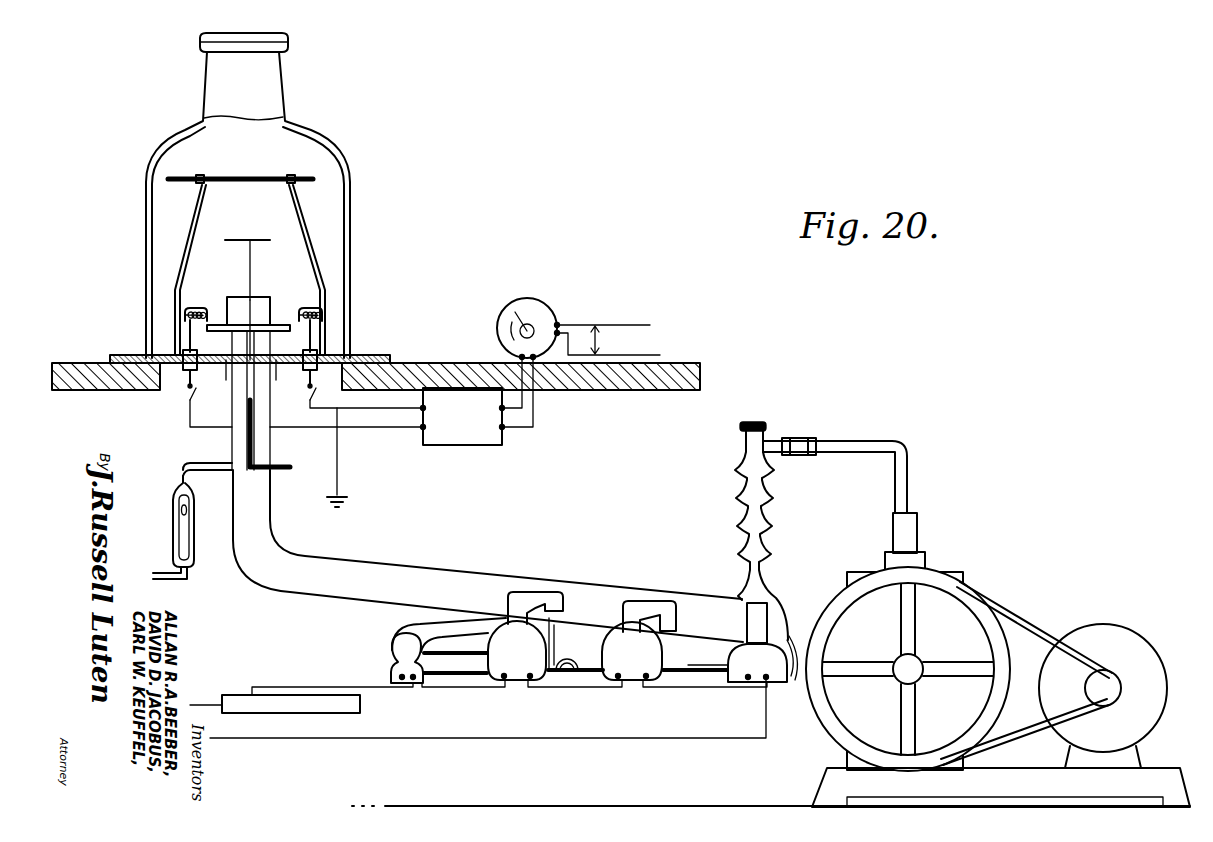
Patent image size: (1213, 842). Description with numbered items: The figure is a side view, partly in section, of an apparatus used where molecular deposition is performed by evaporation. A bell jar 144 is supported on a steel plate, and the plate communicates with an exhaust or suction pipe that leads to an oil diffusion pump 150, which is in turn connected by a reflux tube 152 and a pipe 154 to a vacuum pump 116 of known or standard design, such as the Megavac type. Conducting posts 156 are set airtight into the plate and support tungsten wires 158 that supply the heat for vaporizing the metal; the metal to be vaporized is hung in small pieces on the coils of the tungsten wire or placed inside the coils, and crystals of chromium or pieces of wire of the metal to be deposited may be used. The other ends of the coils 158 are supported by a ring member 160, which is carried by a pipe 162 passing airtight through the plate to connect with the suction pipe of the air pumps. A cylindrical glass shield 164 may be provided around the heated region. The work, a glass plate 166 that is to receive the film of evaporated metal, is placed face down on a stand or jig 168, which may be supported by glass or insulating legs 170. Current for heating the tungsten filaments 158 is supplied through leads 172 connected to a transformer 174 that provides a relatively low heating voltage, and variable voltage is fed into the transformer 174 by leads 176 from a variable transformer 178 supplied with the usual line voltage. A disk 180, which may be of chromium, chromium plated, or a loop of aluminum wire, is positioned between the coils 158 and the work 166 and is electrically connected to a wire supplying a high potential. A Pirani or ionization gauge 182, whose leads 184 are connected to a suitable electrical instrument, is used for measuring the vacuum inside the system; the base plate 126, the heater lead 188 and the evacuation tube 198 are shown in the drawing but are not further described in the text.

The vacuum pump 116 is at (962, 572).
The base plate 126 is at (372, 356).
The bell jar 144 is at (351, 165).
The oil diffusion pump 150 is at (604, 578).
The reflux tube 152 is at (774, 538).
The pipe 154 is at (853, 438).
The conducting posts 156 is at (186, 332).
The tungsten wires 158 is at (183, 312).
The ring member 160 is at (216, 320).
The pipe 162 is at (236, 372).
The cylindrical glass shield 164 is at (256, 297).
The glass plate 166 is at (207, 176).
The stand or jig 168 is at (292, 175).
The glass or insulating legs 170 is at (322, 208).
The leads 172 is at (186, 420).
The transformer 174 is at (482, 442).
The leads 176 is at (537, 421).
The variable transformer 178 is at (560, 312).
The disk 180 is at (258, 231).
The Pirani or ionization gauge 182 is at (177, 508).
The leads 184 is at (180, 578).
The heater lead 188 is at (301, 470).
The evacuation tube 198 is at (358, 565).